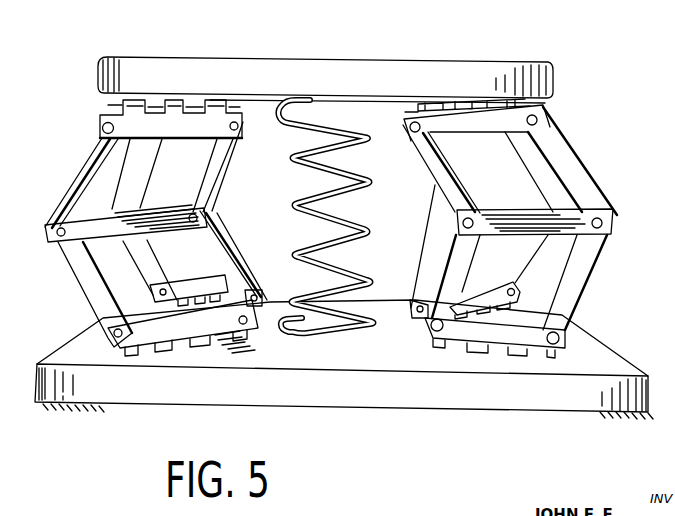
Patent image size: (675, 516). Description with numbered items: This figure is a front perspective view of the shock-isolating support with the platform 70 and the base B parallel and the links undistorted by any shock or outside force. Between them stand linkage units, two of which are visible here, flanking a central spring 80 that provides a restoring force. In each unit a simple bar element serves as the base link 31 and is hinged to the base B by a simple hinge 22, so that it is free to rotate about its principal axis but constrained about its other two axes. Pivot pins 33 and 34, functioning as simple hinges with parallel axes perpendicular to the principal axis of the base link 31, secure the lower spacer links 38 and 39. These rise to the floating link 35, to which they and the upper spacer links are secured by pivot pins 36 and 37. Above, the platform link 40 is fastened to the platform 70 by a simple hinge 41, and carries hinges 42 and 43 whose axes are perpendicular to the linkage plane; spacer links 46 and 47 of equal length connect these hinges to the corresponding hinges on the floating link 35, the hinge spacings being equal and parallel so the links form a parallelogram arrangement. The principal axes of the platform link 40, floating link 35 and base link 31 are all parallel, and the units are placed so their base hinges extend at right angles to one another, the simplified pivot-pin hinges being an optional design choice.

The platform 70 is at (320, 73).
The base B is at (583, 412).
The central spring 80 is at (368, 187).
The platform link 40 is at (124, 128).
The simple hinge 41 is at (176, 108).
The simple hinge 42 is at (103, 128).
The simple hinge 43 is at (243, 127).
The spacer link 46 is at (70, 192).
The spacer link 47 is at (210, 175).
The pivot pin 36 is at (57, 236).
The pivot pin 37 is at (192, 213).
The spacer link 38 is at (88, 288).
The floating link 35 is at (90, 228).
The spacer link 39 is at (210, 273).
The pivot pin 33 is at (108, 338).
The base link 31 is at (153, 328).
The simple hinge 22 is at (182, 350).
The pivot pin 34 is at (248, 330).